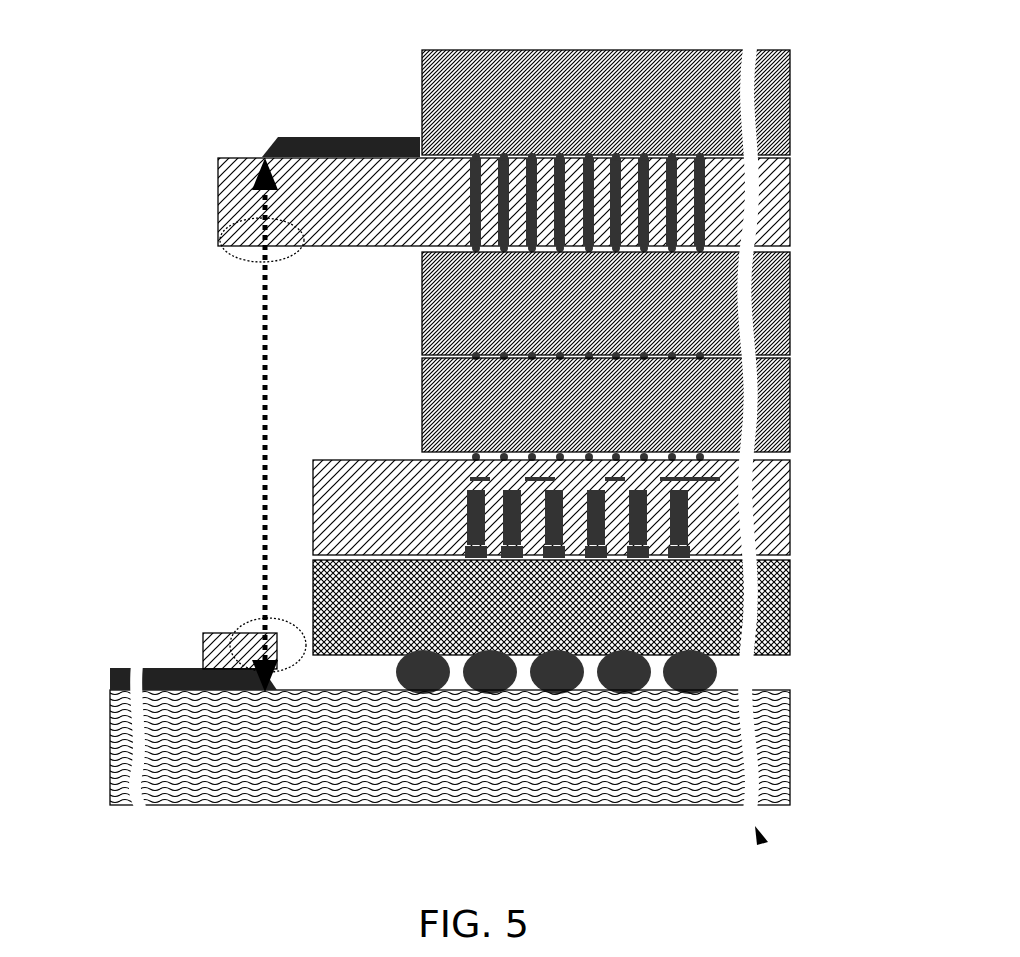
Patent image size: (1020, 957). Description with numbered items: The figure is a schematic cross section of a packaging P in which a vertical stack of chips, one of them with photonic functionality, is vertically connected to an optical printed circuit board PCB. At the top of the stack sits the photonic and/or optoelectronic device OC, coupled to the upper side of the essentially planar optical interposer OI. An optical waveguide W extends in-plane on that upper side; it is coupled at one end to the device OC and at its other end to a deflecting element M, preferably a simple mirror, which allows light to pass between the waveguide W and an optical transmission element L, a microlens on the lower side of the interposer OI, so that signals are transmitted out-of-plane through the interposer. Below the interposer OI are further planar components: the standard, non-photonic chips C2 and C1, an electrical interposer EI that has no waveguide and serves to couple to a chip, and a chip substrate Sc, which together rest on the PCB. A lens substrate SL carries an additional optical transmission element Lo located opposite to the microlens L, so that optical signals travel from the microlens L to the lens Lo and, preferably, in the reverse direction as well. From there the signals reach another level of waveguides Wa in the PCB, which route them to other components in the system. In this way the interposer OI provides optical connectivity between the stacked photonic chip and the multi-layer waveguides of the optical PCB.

The optical waveguide W is at (338, 135).
The deflecting element M is at (262, 140).
The optical transmission element L is at (228, 262).
The photonic and/or optoelectronic device OC is at (777, 85).
The optical interposer OI is at (777, 180).
The standard chip C2 is at (767, 290).
The standard chip C1 is at (767, 385).
The electrical interposer EI is at (772, 485).
The chip substrate Sc is at (783, 590).
The optical printed circuit board PCB is at (777, 728).
The packaging P is at (762, 838).
The additional optical transmission element Lo is at (248, 625).
The lens substrate SL is at (210, 660).
The additional waveguide Wa is at (112, 668).